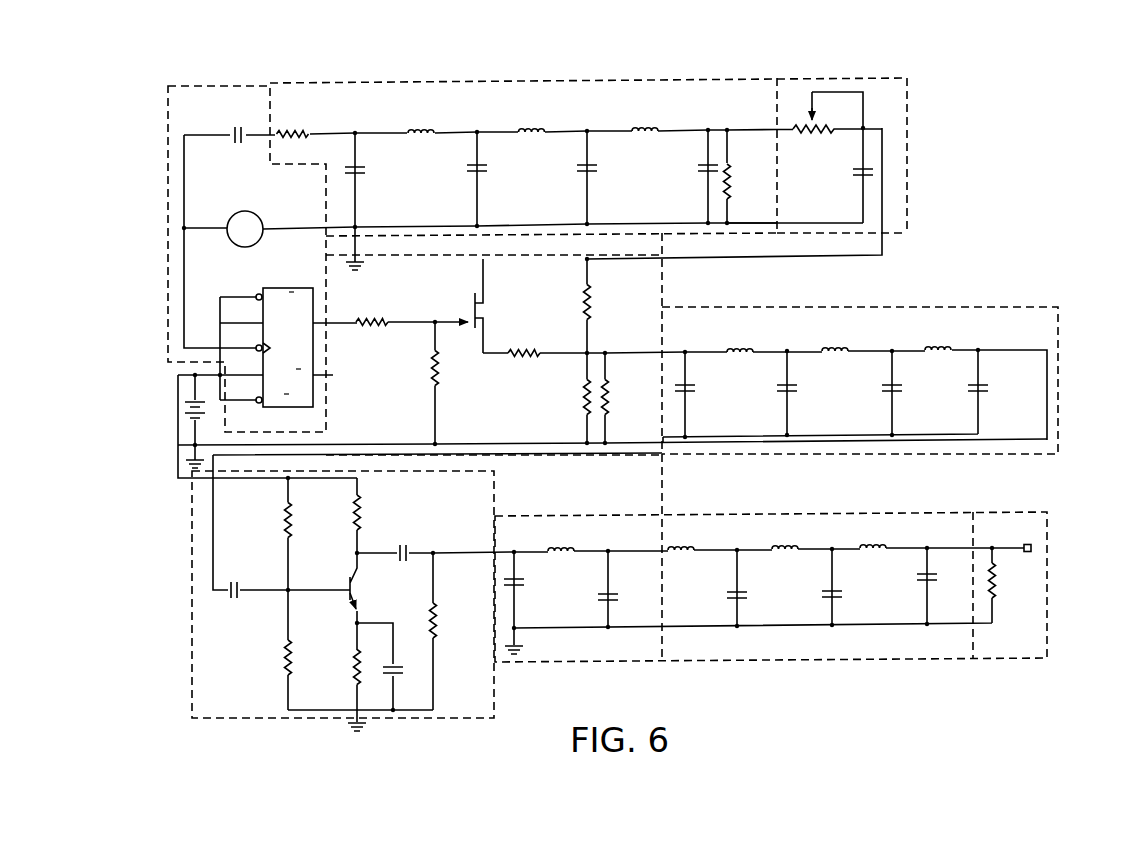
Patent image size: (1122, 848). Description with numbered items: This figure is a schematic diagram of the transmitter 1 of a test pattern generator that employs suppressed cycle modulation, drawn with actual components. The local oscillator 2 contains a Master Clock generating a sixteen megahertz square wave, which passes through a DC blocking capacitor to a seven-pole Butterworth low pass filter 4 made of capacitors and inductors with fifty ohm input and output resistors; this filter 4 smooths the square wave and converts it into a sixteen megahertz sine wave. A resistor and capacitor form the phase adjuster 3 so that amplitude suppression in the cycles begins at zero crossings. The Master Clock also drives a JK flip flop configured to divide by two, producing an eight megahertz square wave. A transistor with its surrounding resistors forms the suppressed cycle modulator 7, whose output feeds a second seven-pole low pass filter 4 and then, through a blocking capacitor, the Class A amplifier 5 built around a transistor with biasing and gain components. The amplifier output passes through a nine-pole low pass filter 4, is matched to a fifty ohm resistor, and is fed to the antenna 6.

The transmitter 1 is at (1056, 102).
The local oscillator 2 is at (152, 151).
The phase adjuster 3 is at (914, 140).
The low pass filter 4 is at (698, 72).
The Class A amplifier 5 is at (521, 676).
The antenna 6 is at (1054, 527).
The suppressed cycle modulator 7 is at (674, 286).